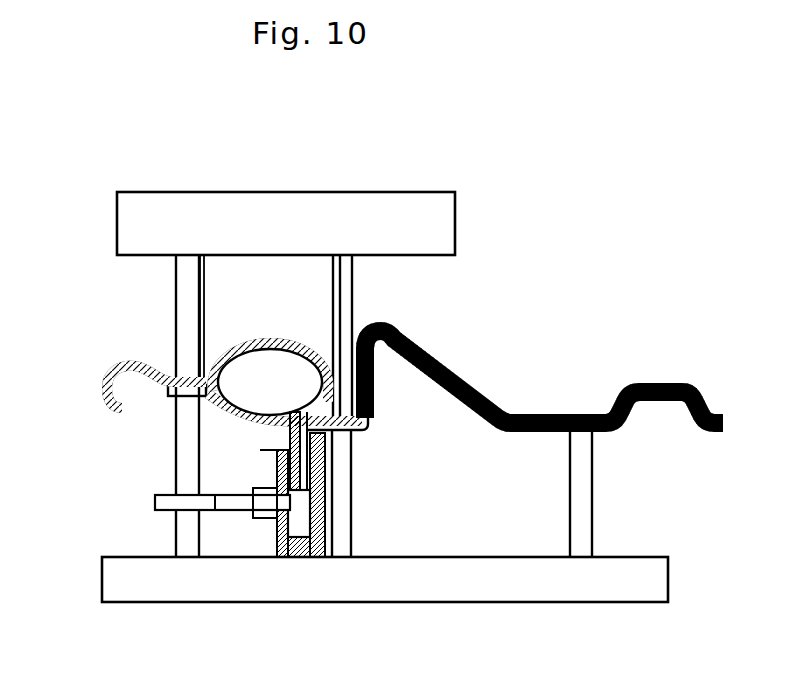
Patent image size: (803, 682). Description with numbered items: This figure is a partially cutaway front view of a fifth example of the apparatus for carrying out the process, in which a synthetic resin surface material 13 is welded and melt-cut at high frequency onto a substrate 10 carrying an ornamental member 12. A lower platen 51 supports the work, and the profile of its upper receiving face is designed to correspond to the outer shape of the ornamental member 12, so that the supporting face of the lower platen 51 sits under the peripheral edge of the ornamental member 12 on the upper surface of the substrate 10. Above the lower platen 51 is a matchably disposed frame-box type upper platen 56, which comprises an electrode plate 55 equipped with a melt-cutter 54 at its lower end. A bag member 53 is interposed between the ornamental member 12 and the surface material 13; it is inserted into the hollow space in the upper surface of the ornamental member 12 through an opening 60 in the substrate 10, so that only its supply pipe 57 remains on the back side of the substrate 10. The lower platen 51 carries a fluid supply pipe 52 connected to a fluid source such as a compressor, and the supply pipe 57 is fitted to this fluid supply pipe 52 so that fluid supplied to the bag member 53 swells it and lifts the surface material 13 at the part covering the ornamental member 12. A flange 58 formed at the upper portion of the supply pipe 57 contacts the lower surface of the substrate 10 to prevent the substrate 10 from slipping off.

The substrate 10 is at (615, 428).
The ornamental member 12 is at (207, 378).
The synthetic resin surface material 13 is at (555, 412).
The lower platen 51 is at (364, 607).
The fluid supply pipe 52 is at (198, 506).
The bag member 53 is at (261, 368).
The melt-cutter 54 is at (203, 300).
The electrode plate 55 is at (180, 368).
The upper platen 56 is at (258, 210).
The supply pipe 57 is at (277, 451).
The flange 58 is at (292, 427).
The opening 60 is at (350, 434).